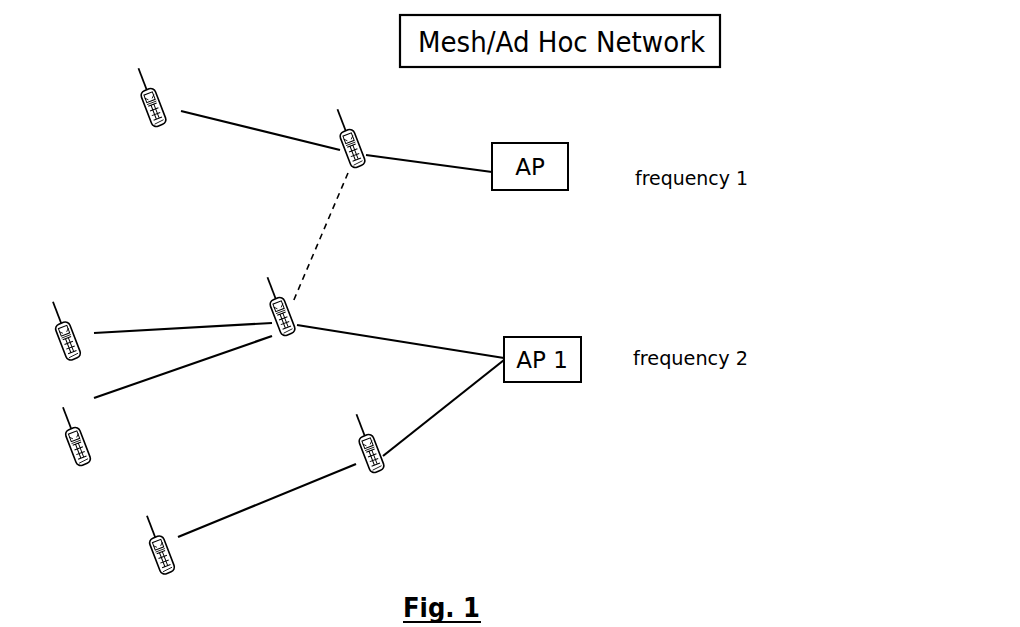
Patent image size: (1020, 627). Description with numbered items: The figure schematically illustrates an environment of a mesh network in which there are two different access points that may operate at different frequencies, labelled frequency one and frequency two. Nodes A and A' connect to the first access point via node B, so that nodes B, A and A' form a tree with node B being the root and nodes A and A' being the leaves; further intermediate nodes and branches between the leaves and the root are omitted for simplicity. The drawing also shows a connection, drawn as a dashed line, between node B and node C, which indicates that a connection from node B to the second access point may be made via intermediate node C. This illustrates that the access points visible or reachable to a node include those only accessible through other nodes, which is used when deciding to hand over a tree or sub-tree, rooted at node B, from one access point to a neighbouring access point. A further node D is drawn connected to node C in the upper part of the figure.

The node A is at (52, 333).
The node A' is at (57, 444).
The node B is at (278, 321).
The node C is at (358, 138).
The mobile station D is at (122, 104).